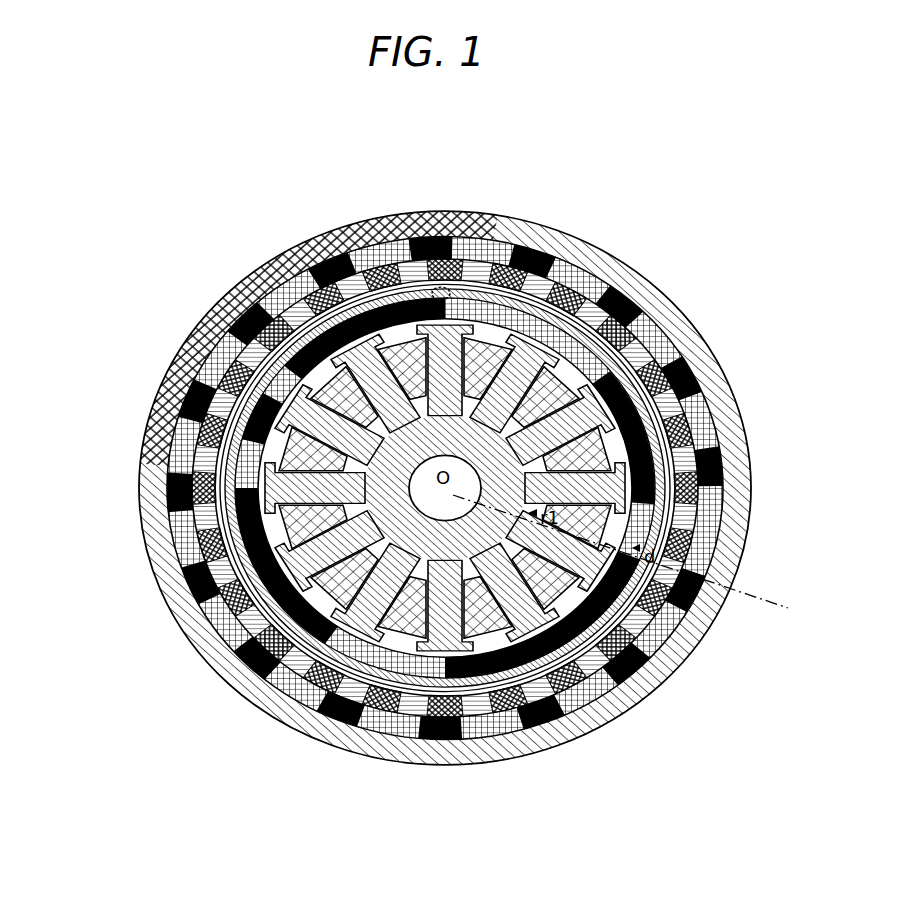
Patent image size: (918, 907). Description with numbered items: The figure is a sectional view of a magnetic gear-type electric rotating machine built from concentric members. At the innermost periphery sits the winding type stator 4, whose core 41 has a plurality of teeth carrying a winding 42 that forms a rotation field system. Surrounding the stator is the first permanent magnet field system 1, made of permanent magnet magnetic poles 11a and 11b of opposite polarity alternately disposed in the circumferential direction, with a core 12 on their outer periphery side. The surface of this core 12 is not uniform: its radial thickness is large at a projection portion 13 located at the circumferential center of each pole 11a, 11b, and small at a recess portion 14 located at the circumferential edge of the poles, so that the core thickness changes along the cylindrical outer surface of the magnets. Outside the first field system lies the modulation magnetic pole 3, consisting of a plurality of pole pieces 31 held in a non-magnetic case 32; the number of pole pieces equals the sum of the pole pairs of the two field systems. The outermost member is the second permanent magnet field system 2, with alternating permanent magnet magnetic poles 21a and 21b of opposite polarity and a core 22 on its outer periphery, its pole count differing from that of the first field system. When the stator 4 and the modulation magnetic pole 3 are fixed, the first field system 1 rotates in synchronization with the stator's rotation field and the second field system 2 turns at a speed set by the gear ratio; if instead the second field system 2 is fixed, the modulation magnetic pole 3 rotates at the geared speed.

The first permanent magnet field system 1 is at (262, 357).
The permanent magnet magnetic pole 11a is at (303, 293).
The permanent magnet magnetic pole 11b is at (243, 424).
The core 12 is at (215, 437).
The projection portion 13 is at (323, 327).
The recess portion 14 is at (432, 283).
The second permanent magnet field system 2 is at (485, 213).
The permanent magnet magnetic pole 21a is at (608, 300).
The permanent magnet magnetic pole 21b is at (655, 334).
The core 22 is at (548, 241).
The modulation magnetic pole 3 is at (712, 500).
The pole pieces 31 is at (700, 585).
The non-magnetic case 32 is at (625, 628).
The winding type stator 4 is at (433, 647).
The core 41 is at (350, 612).
The winding 42 is at (397, 613).